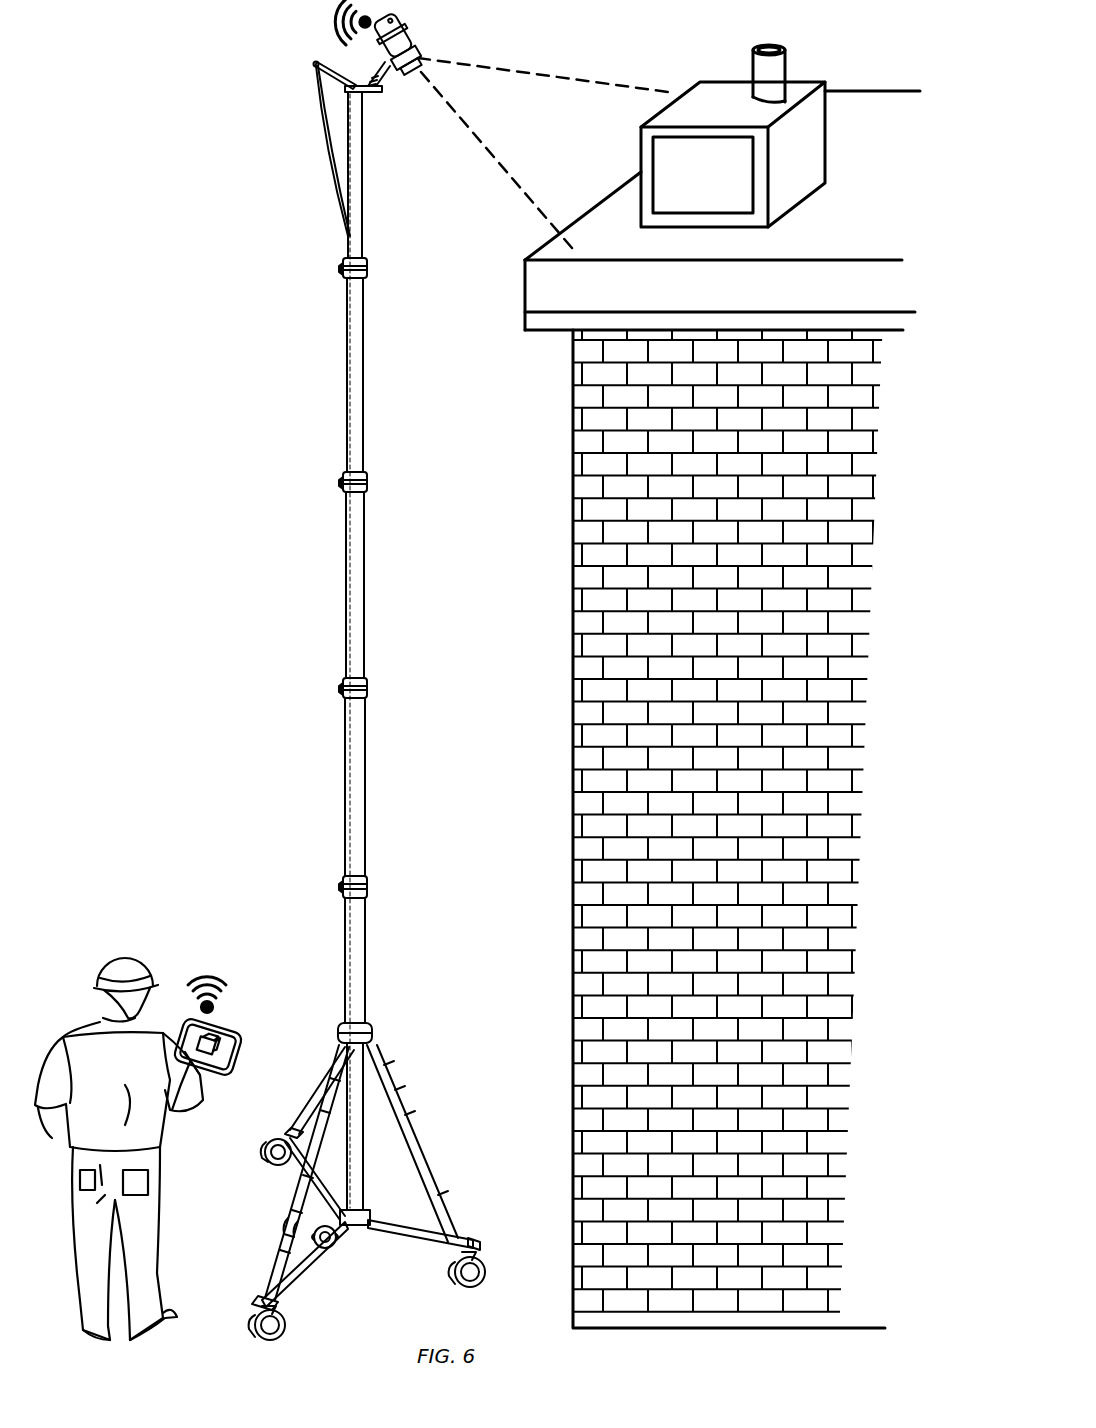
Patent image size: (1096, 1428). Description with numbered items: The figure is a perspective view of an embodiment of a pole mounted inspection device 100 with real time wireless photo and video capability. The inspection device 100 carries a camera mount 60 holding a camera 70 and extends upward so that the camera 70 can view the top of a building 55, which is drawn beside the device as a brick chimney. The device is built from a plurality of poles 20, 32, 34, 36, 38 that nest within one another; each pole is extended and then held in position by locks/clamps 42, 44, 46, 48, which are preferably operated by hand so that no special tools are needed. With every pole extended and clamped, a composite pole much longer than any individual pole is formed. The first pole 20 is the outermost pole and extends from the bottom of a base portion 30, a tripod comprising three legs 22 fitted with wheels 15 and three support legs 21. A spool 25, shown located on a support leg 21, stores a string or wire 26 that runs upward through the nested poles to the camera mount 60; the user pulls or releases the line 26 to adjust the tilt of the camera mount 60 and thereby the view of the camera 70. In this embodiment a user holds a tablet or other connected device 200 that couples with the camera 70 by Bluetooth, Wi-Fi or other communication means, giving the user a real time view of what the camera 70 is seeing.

The inspection device 100 is at (255, 250).
The camera mount 60 is at (283, 34).
The camera 70 is at (425, 52).
The string or wire 26 is at (330, 120).
The pole 38 is at (363, 165).
The lock/clamp 48 is at (366, 268).
The pole 36 is at (363, 360).
The lock/clamp 46 is at (366, 480).
The pole 34 is at (364, 585).
The lock/clamp 44 is at (366, 688).
The pole 32 is at (365, 783).
The lock/clamp 42 is at (366, 886).
The first pole 20 is at (365, 962).
The base portion 30 is at (430, 1056).
The leg 22 is at (404, 1111).
The support leg 21 is at (400, 1224).
The wheel 15 is at (480, 1279).
The spool 25 is at (336, 1239).
The building 55 is at (641, 142).
The tablet or other connected device 200 is at (248, 1036).